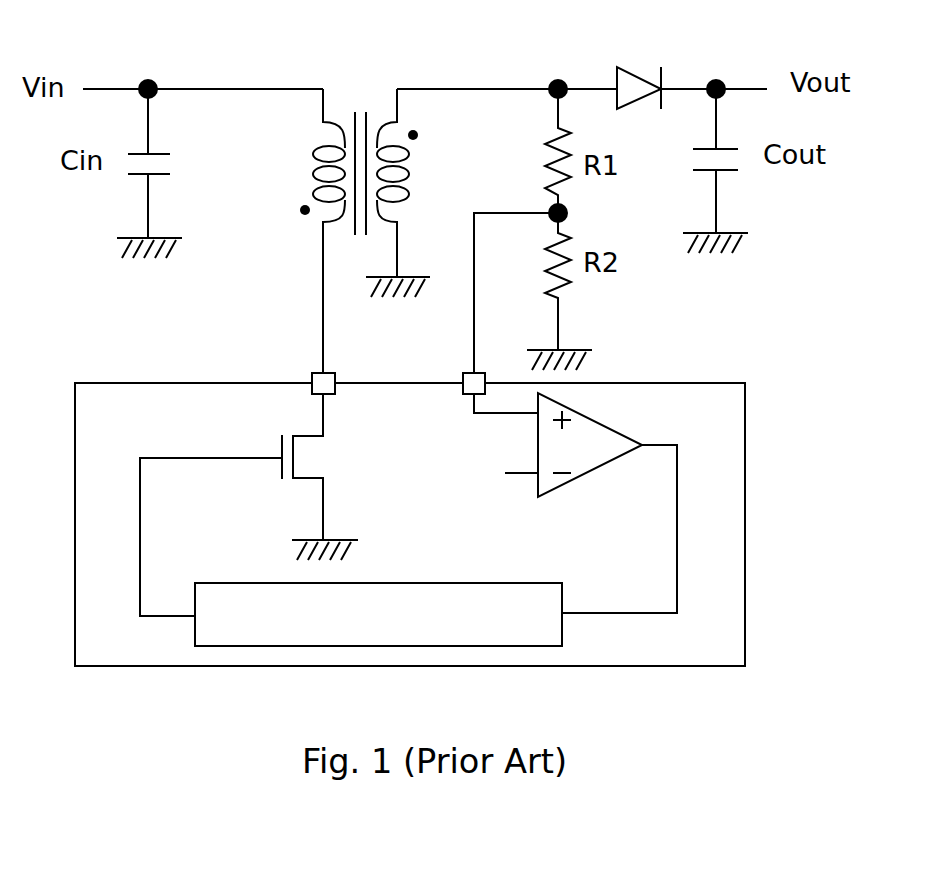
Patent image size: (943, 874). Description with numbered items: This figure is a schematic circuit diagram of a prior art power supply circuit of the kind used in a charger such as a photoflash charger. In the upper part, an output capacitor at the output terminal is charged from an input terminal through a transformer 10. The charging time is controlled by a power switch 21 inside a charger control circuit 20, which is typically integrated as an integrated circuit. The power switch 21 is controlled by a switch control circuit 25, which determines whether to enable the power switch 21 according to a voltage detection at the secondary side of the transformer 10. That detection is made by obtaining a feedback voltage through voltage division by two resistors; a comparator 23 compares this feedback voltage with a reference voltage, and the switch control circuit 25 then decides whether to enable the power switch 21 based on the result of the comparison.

The transformer 10 is at (375, 82).
The charger control circuit 20 is at (745, 440).
The power switch 21 is at (249, 505).
The comparator 23 is at (597, 468).
The switch control circuit 25 is at (526, 628).